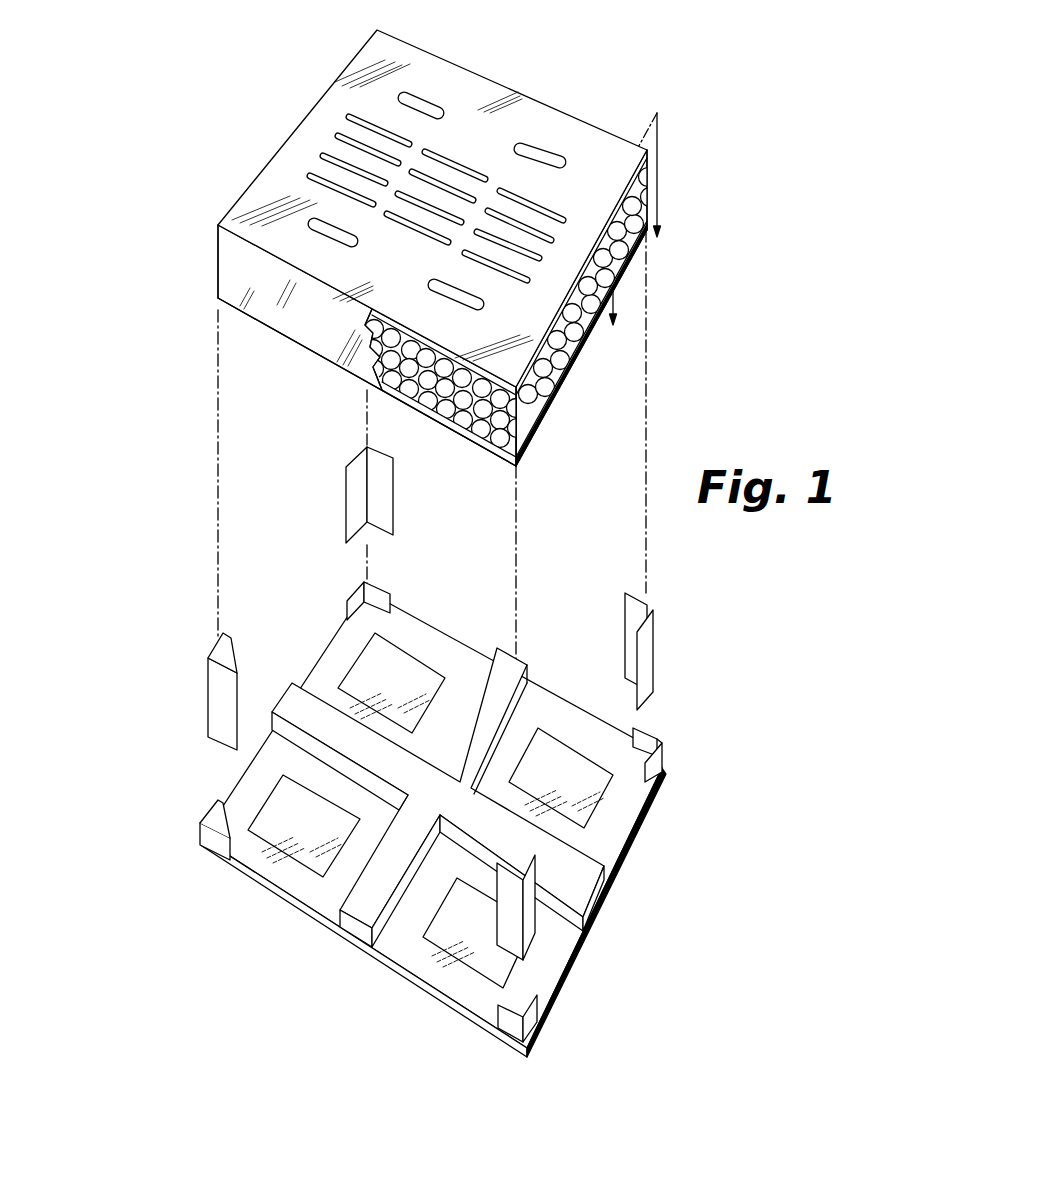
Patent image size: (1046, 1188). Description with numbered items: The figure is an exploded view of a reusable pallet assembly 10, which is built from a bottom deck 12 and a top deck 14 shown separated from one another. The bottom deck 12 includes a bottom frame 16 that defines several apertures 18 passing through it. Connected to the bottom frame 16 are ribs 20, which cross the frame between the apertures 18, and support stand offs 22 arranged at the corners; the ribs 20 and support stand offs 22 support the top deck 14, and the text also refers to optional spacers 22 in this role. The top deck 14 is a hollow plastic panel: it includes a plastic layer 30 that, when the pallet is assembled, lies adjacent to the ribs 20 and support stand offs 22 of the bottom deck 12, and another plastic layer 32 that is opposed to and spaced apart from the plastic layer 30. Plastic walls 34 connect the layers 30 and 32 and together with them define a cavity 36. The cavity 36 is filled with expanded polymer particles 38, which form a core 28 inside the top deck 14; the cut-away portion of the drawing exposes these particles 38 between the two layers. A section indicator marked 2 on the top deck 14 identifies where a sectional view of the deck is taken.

The section line 2- 2 is at (631, 204).
The reusable pallet assembly 10 is at (186, 374).
The bottom deck 12 is at (234, 780).
The top deck 14 is at (236, 197).
The bottom frame 16 is at (294, 908).
The apertures 18 is at (310, 832).
The ribs 20 is at (276, 705).
The support stand offs 22 is at (208, 680).
The core 28 is at (558, 361).
The plastic layer 30 is at (300, 343).
The plastic layer 32 is at (290, 137).
The plastic walls 34 is at (216, 262).
The cavity 36 is at (505, 304).
The expanded polymer particles 38 is at (550, 385).